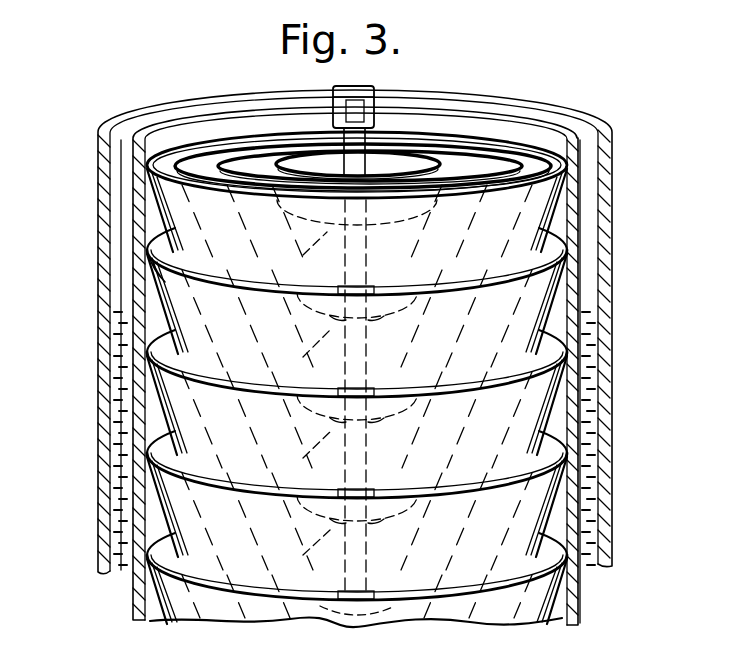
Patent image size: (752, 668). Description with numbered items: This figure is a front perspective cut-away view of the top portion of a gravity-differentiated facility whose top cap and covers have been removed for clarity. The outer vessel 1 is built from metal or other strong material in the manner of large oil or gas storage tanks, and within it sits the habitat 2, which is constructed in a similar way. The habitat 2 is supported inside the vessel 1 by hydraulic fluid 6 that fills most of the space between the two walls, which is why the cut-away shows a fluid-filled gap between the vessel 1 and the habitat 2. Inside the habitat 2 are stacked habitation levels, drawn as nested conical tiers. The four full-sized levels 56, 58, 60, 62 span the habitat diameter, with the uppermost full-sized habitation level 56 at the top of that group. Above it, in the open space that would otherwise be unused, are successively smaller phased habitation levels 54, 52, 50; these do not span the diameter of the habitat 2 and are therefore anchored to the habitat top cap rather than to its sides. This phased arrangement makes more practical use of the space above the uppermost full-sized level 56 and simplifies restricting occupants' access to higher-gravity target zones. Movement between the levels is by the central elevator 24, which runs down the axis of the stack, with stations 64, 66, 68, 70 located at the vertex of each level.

The vessel 1 is at (612, 168).
The habitat 2 is at (574, 228).
The hydraulic fluid 6 is at (113, 352).
The central elevator 24 is at (378, 90).
The phased habitation level 50 is at (280, 170).
The phased habitation level 52 is at (150, 170).
The phased habitation level 54 is at (145, 245).
The uppermost full-sized habitation level 56 is at (140, 272).
The full-sized habitation level 58 is at (135, 383).
The full-sized habitation level 60 is at (143, 452).
The full-sized habitation level 62 is at (178, 534).
The station 64 is at (271, 258).
The station 66 is at (267, 358).
The station 68 is at (266, 460).
The station 70 is at (267, 557).